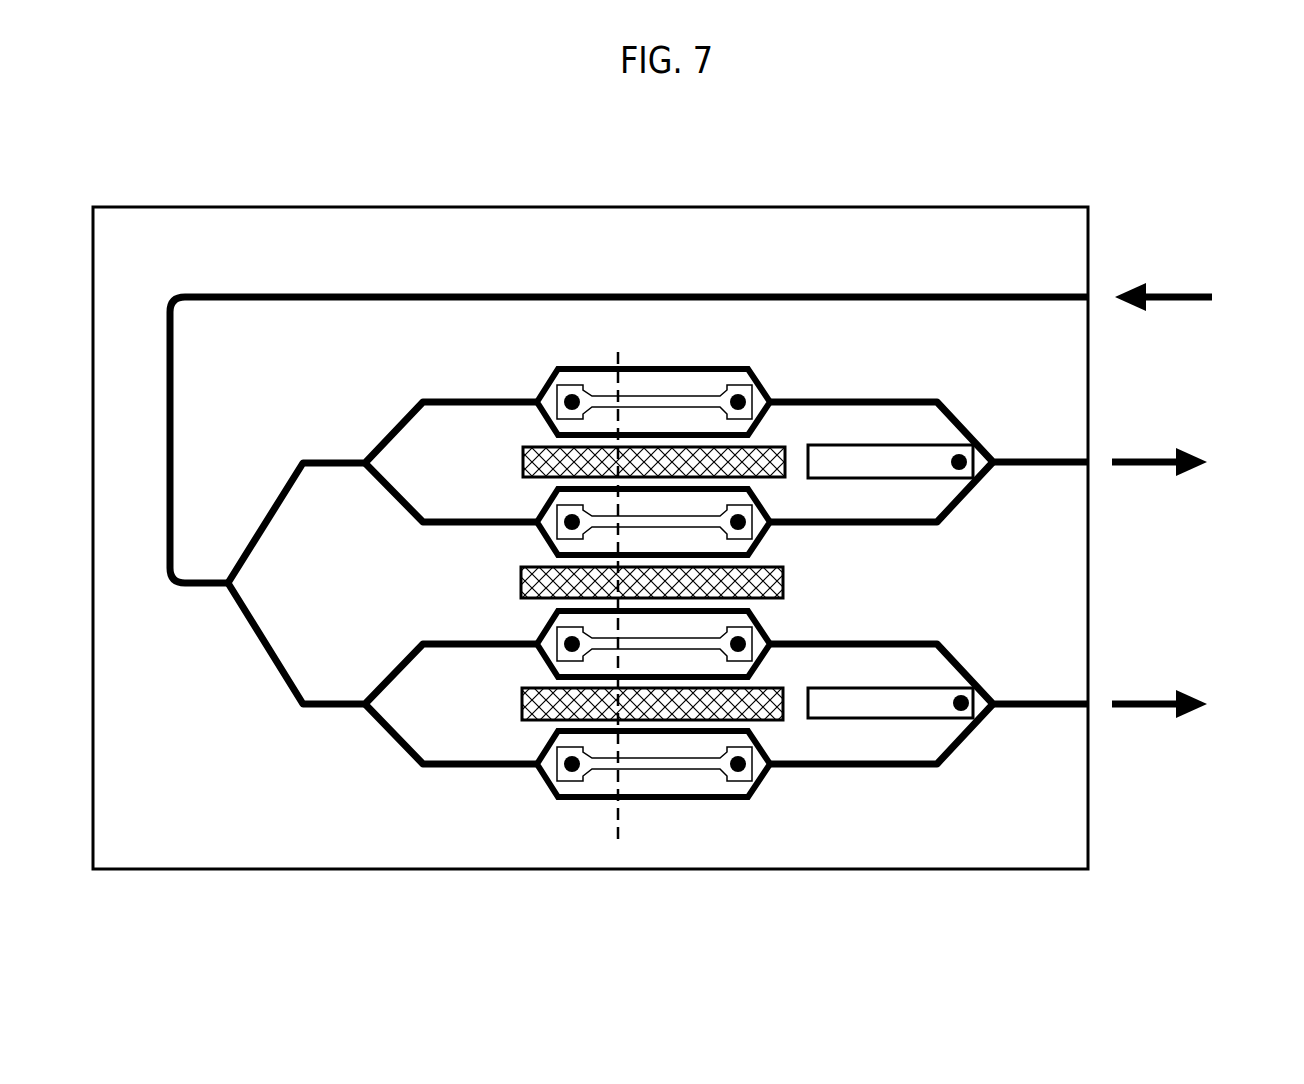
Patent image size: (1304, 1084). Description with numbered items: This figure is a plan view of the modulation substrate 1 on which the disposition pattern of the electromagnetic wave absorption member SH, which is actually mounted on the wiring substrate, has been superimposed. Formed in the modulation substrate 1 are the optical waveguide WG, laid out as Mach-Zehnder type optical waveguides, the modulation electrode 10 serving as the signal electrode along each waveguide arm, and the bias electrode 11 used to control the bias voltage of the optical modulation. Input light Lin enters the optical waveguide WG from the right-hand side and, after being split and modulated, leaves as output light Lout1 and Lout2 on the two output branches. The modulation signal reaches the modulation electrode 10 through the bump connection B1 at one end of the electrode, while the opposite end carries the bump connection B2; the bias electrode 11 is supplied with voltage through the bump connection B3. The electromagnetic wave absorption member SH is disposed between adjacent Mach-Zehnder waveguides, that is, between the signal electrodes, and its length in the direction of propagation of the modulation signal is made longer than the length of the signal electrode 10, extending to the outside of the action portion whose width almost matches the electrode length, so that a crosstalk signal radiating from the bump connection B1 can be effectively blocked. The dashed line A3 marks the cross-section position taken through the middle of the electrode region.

The modulation substrate 1 is at (892, 231).
The optical waveguide WG is at (455, 284).
The modulation electrode 10 is at (655, 764).
The bias electrode 11 is at (880, 710).
The bump connection B1 is at (572, 780).
The bump / contact B2 is at (740, 778).
The bump connection B3 is at (963, 715).
The electromagnetic wave absorption member SH is at (518, 710).
The cross-section line A3 is at (622, 578).
The input light Lin is at (1163, 283).
The output light 1 Lout1 is at (1160, 446).
The output light 2 Lout2 is at (1161, 687).